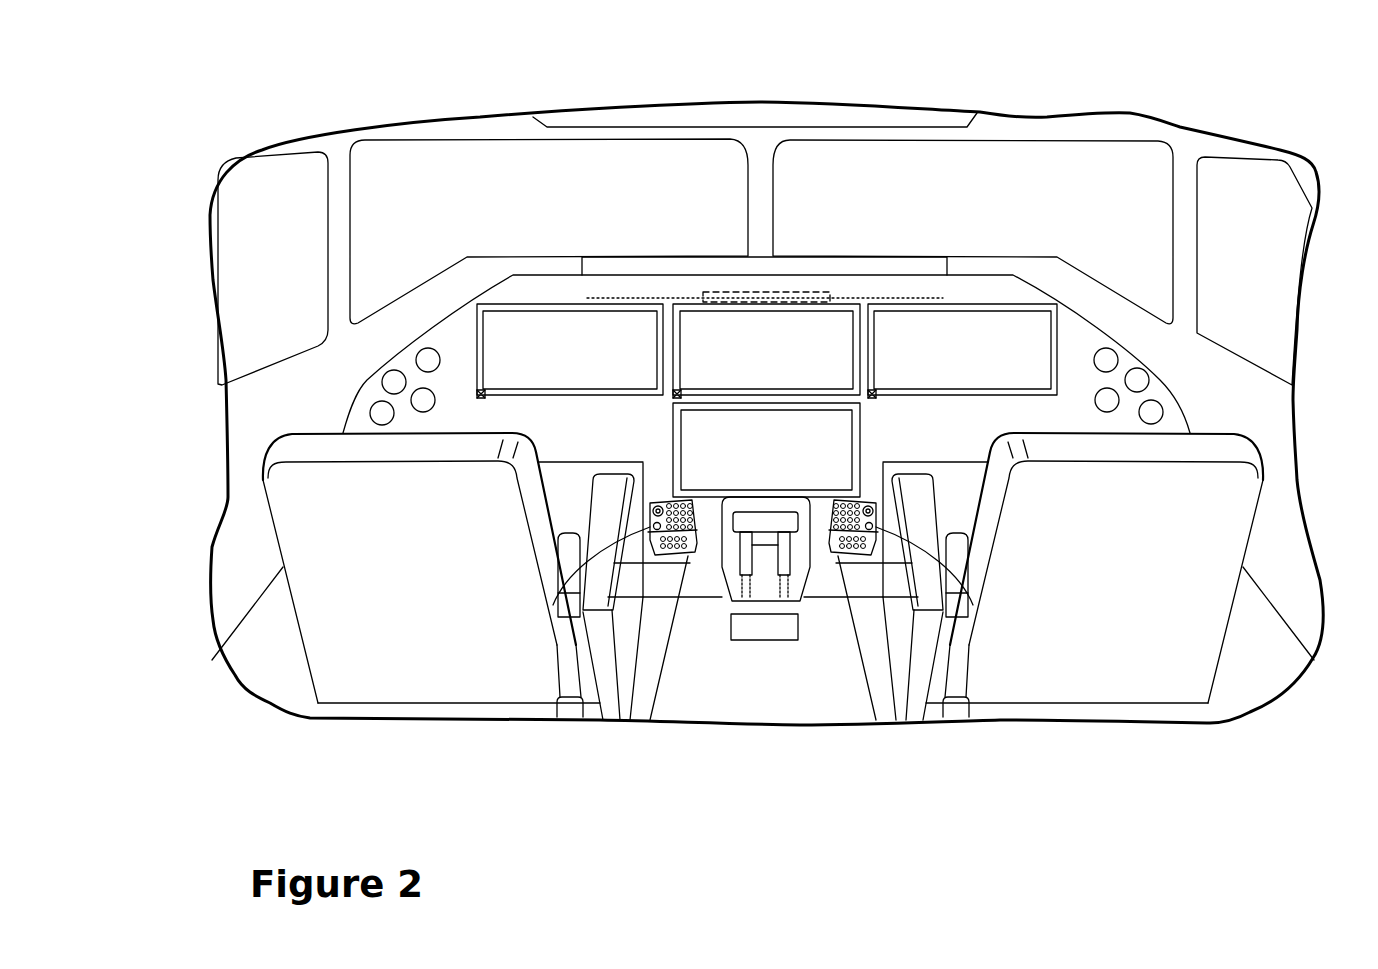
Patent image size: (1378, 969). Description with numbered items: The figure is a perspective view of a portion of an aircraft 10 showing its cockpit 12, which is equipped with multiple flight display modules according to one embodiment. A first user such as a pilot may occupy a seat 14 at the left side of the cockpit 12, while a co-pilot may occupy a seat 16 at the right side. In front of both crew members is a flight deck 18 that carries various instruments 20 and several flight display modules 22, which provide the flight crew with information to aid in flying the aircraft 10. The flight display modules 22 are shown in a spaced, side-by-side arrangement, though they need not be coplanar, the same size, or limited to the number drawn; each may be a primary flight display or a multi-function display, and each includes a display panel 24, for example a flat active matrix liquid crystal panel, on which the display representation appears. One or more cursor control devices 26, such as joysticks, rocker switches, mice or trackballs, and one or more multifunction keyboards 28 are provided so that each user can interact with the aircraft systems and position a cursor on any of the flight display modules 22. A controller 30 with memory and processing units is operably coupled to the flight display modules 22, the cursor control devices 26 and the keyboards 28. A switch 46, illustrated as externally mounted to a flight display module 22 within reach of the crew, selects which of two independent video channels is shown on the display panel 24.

The aircraft 10 is at (318, 64).
The cockpit 12 is at (480, 117).
The seat 14 is at (363, 668).
The seat 16 is at (1150, 657).
The flight deck 18 is at (383, 357).
The instruments 20 is at (372, 414).
The flight display module 22 is at (650, 300).
The display panel 24 is at (612, 337).
The cursor control device 26 is at (645, 503).
The multifunction keyboard 28 is at (698, 553).
The controller 30 is at (805, 297).
The switch 46 is at (481, 398).